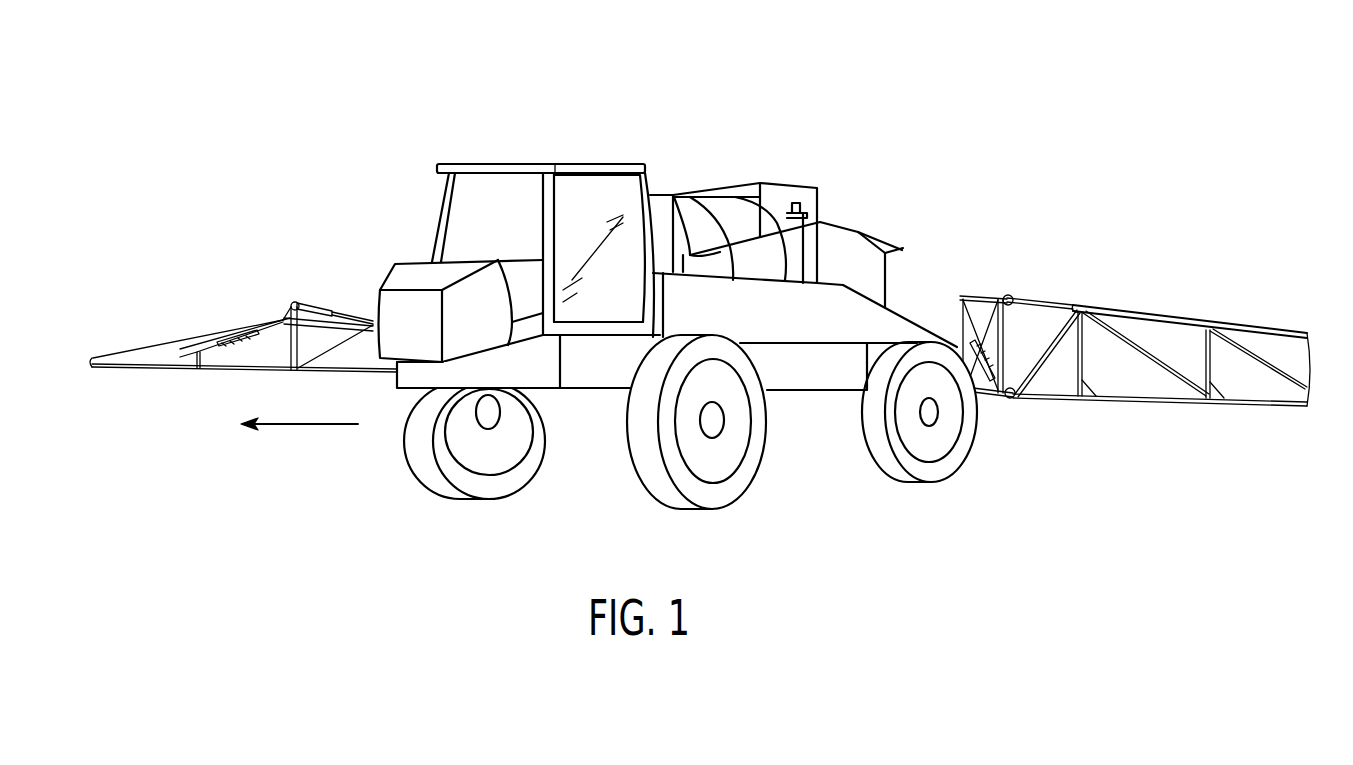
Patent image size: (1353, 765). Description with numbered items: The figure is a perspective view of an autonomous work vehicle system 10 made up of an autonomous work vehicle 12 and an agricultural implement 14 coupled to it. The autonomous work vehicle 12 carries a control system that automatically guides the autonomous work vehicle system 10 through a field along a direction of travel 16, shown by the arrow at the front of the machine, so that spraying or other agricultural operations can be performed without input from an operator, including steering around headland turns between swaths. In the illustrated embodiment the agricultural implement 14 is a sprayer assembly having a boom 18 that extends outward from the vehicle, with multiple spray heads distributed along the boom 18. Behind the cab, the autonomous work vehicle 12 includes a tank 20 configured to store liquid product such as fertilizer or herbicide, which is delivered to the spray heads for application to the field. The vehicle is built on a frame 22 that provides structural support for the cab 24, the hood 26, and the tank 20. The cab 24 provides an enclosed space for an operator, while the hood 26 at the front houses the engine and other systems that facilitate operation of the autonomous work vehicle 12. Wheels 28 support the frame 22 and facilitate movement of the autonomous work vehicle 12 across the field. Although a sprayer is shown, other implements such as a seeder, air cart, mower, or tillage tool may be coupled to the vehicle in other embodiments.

The autonomous work vehicle system 10 is at (398, 171).
The autonomous work vehicle 12 is at (820, 302).
The agricultural implement 14 is at (1198, 261).
The direction of travel 16 is at (287, 427).
The boom 18 is at (1142, 312).
The tank 20 is at (663, 194).
The frame 22 is at (817, 390).
The cab 24 is at (495, 164).
The hood 26 is at (407, 283).
The wheels 28 is at (743, 490).